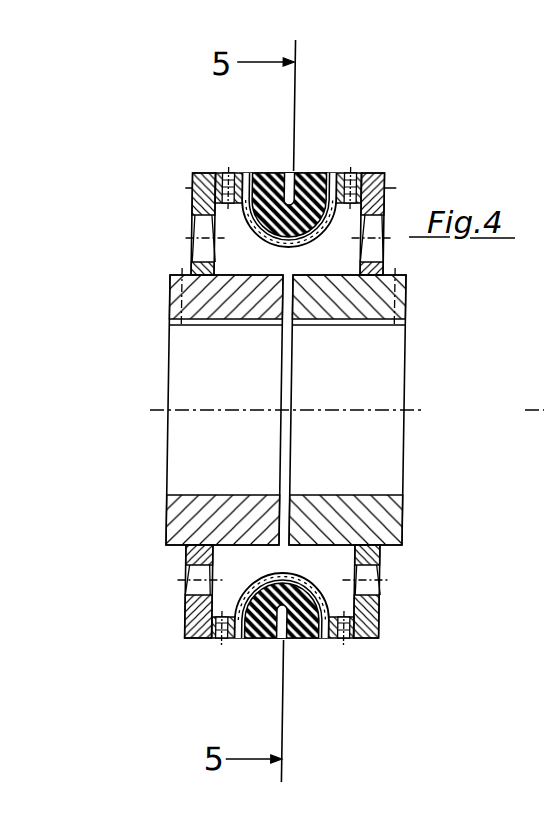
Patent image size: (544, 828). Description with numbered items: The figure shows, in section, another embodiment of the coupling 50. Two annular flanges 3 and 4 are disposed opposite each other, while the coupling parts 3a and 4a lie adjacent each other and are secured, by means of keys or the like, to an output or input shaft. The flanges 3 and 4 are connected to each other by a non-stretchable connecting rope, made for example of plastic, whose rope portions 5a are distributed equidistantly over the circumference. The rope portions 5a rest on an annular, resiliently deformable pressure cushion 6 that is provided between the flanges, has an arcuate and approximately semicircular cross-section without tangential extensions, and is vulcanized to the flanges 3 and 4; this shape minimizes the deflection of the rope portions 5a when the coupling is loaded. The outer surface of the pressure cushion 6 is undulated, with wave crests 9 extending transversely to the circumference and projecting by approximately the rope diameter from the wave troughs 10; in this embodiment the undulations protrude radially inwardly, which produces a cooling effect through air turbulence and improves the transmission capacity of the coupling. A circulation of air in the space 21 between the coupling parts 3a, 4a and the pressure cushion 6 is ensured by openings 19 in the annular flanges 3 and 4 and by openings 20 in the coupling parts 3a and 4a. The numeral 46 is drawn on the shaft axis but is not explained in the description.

The shaft 46 is at (418, 410).
The coupling 50 is at (406, 293).
The coupling part 3a is at (165, 542).
The coupling part 4a is at (407, 547).
The openings 20 is at (190, 583).
The rope portions 5a is at (247, 180).
The pressure cushion 6 is at (309, 182).
The wave troughs 10 is at (253, 232).
The wave crests 9 is at (300, 240).
The space 21 is at (233, 600).
The openings 19 is at (216, 649).
The annular flange 3 is at (243, 646).
The annular flange 4 is at (296, 648).